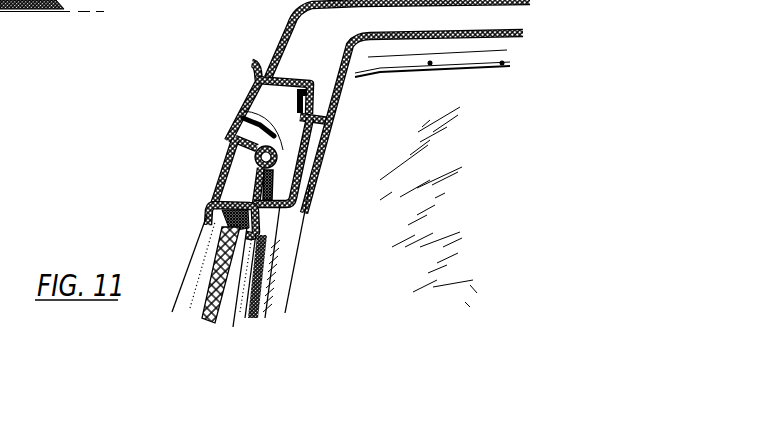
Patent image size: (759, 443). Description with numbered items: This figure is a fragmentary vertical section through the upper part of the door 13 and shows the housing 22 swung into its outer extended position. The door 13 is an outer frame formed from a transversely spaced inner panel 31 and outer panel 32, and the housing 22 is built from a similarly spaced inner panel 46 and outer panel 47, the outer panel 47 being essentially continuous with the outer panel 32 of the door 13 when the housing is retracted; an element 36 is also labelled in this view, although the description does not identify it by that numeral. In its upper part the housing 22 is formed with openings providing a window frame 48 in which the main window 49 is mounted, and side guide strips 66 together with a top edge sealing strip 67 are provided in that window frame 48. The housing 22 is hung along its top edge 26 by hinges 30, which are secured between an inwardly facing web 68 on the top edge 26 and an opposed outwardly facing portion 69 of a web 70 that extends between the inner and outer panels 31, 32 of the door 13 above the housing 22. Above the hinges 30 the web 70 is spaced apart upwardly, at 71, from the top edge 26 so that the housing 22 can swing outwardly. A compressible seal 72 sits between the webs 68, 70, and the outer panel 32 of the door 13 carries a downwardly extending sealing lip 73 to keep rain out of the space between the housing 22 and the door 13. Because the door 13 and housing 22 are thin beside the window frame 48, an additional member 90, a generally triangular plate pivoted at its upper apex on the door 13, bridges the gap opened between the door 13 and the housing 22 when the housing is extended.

The door 13 is at (216, 96).
The housing 22 is at (143, 252).
The top edge 26 is at (288, 227).
The hinges 30 is at (292, 90).
The inner panel 31 is at (327, 134).
The outer panel 32 is at (251, 96).
The roof panel 36 is at (343, 98).
The inner panel 46 is at (243, 310).
The outer panel 47 is at (218, 184).
The window frame 48 is at (175, 271).
The main window 49 is at (193, 308).
The side guide strips 66 is at (240, 267).
The top edge sealing strip 67 is at (224, 217).
The inwardly facing web 68 is at (252, 178).
The outwardly facing portion 69 is at (281, 178).
The web 70 is at (281, 152).
The upward spacing 71 is at (292, 90).
The compressible seal 72 is at (298, 203).
The sealing lip 73 is at (231, 134).
The additional member 90 is at (254, 299).